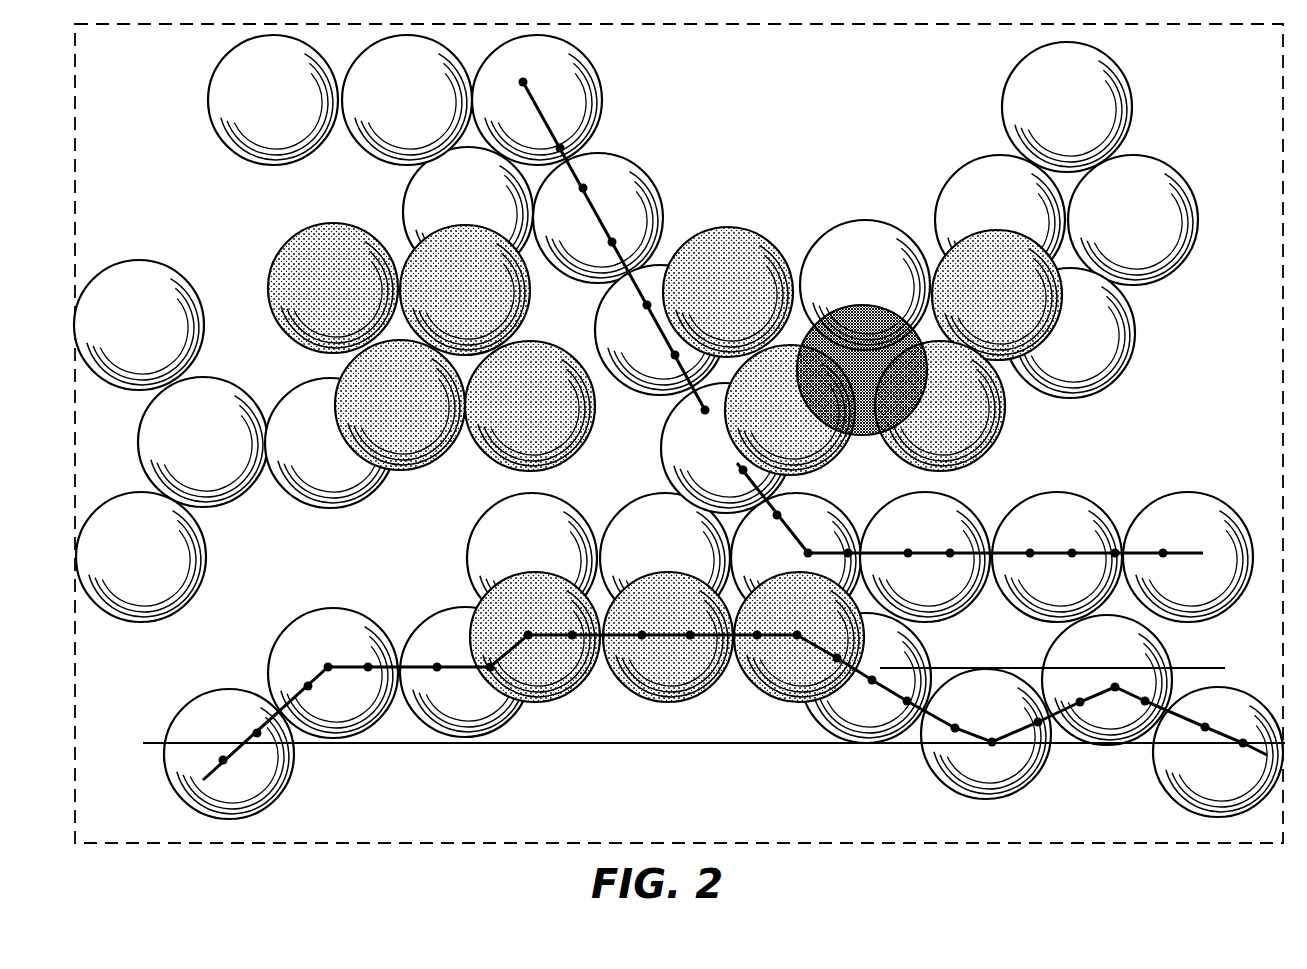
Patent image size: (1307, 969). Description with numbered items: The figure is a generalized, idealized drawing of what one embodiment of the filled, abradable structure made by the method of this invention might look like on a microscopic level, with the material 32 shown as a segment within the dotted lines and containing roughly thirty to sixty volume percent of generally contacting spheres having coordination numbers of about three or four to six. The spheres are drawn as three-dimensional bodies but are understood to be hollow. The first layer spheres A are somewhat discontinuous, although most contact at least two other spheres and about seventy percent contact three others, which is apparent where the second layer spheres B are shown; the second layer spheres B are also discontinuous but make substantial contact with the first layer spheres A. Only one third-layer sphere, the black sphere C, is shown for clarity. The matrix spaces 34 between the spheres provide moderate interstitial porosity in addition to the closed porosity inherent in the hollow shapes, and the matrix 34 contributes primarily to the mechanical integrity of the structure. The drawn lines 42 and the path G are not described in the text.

The filled abradable structure material 32 is at (733, 96).
The matrix spaces 34 is at (878, 95).
The plane line 42 is at (790, 745).
The first layer spheres A is at (362, 508).
The second layer spheres B is at (650, 597).
The third layer sphere C is at (847, 300).
The path G is at (595, 205).